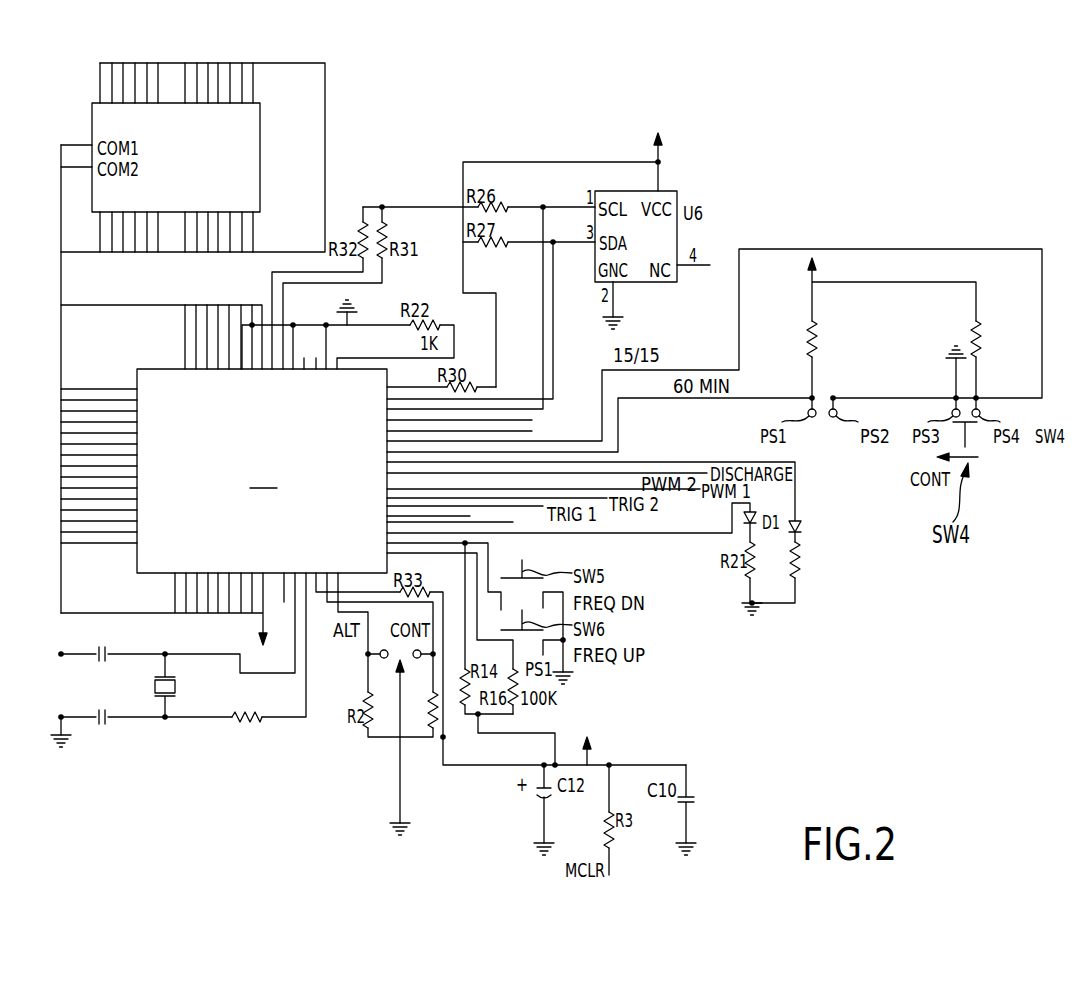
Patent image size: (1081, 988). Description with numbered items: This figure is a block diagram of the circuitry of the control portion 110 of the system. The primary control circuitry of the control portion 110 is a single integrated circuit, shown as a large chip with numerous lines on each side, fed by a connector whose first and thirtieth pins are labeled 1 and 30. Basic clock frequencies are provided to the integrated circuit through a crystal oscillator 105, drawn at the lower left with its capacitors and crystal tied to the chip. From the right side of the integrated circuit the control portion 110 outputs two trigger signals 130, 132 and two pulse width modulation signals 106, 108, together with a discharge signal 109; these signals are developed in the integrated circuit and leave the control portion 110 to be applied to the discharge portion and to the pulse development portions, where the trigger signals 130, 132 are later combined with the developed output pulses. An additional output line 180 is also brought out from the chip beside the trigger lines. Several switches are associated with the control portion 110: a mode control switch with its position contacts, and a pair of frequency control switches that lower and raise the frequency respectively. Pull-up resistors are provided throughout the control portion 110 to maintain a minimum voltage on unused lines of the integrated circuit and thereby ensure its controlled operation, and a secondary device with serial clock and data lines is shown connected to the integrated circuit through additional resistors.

The control portion 110 is at (438, 155).
The connector pin 1 is at (76, 135).
The connector pin 30 is at (76, 181).
The crystal oscillator 105 is at (152, 722).
The discharge signal 109 is at (462, 472).
The pulse width modulation signal 108 is at (593, 487).
The pulse width modulation signal 106 is at (627, 496).
The trigger signal 132 is at (478, 504).
The trigger signal 130 is at (512, 517).
The output line 180 is at (464, 525).